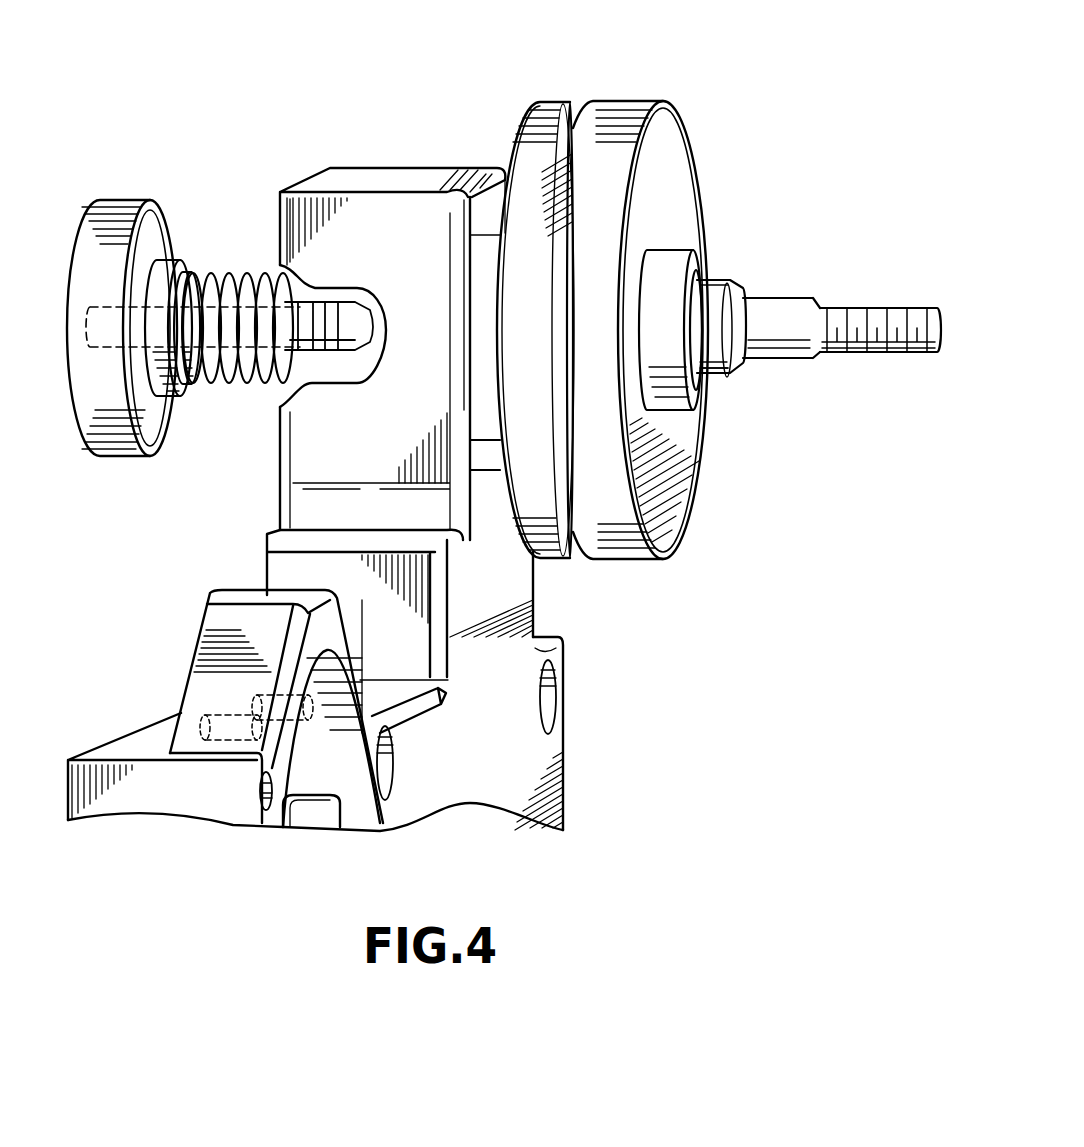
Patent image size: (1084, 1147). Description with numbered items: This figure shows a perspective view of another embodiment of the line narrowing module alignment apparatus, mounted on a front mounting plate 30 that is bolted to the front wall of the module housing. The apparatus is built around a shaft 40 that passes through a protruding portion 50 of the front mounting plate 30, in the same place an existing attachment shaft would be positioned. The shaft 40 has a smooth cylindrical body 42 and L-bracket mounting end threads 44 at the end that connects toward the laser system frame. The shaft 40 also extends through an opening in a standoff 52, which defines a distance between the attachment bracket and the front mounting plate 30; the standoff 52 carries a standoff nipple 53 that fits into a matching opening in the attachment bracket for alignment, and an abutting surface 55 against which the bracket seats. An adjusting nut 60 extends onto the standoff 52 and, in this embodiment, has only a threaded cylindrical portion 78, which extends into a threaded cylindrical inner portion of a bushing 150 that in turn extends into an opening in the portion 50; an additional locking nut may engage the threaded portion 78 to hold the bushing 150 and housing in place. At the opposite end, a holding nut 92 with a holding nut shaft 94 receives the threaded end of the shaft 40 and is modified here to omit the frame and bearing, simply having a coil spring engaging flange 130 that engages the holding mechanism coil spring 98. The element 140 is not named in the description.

The front mounting plate 30 is at (550, 747).
The shaft 40 is at (889, 270).
The smooth cylindrical body 42 is at (782, 347).
The L-bracket mounting end threads 44 is at (918, 358).
The portion of the front mounting plate 50 is at (375, 223).
The standoff 52 is at (710, 255).
The standoff nipple 53 is at (712, 297).
The abutting surface 55 is at (697, 393).
The adjusting nut 60 is at (678, 172).
The threaded cylindrical portion 78 is at (558, 355).
The holding nut 92 is at (122, 208).
The holding nut shaft 94 is at (160, 278).
The holding mechanism coil spring 98 is at (227, 277).
The coil spring engaging flange 130 is at (185, 383).
The second pulley 140 is at (568, 128).
The bushing 150 is at (490, 463).